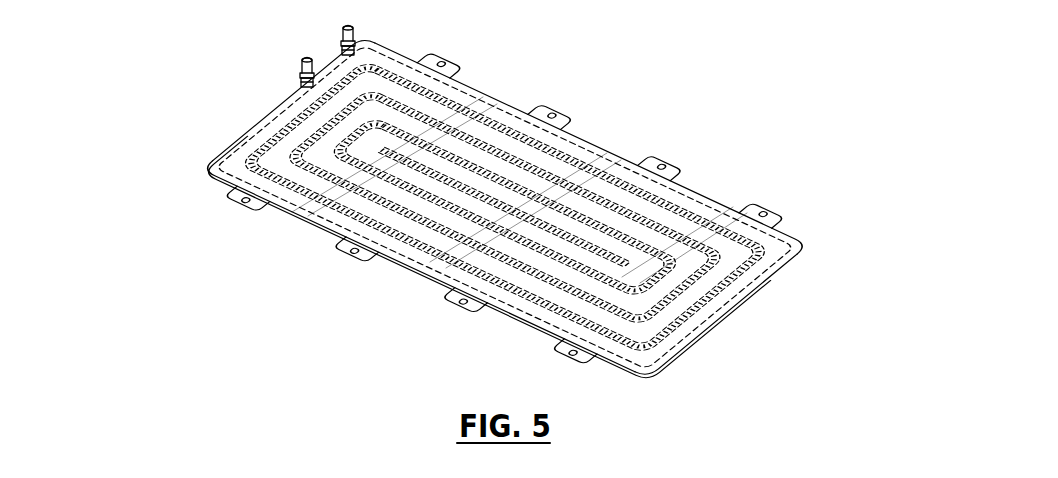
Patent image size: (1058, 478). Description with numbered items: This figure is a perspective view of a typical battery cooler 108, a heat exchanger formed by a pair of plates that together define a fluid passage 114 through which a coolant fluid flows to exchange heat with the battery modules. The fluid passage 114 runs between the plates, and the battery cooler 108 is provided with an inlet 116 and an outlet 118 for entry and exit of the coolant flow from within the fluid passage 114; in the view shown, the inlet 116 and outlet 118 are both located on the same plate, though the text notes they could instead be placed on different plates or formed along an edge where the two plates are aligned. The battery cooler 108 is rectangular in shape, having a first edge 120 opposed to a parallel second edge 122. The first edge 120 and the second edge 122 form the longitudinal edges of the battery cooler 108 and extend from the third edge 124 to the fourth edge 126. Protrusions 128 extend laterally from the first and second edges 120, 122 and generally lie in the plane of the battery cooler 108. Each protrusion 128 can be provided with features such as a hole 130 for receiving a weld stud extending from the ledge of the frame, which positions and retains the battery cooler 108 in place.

The battery cooler 108 is at (802, 153).
The fluid passage 114 is at (245, 172).
The inlet 116 is at (341, 36).
The outlet 118 is at (300, 67).
The first edge 120 is at (593, 140).
The second edge 122 is at (313, 230).
The third edge 124 is at (713, 323).
The fourth edge 126 is at (252, 134).
The protrusion 128 is at (455, 306).
The hole 130 is at (353, 260).